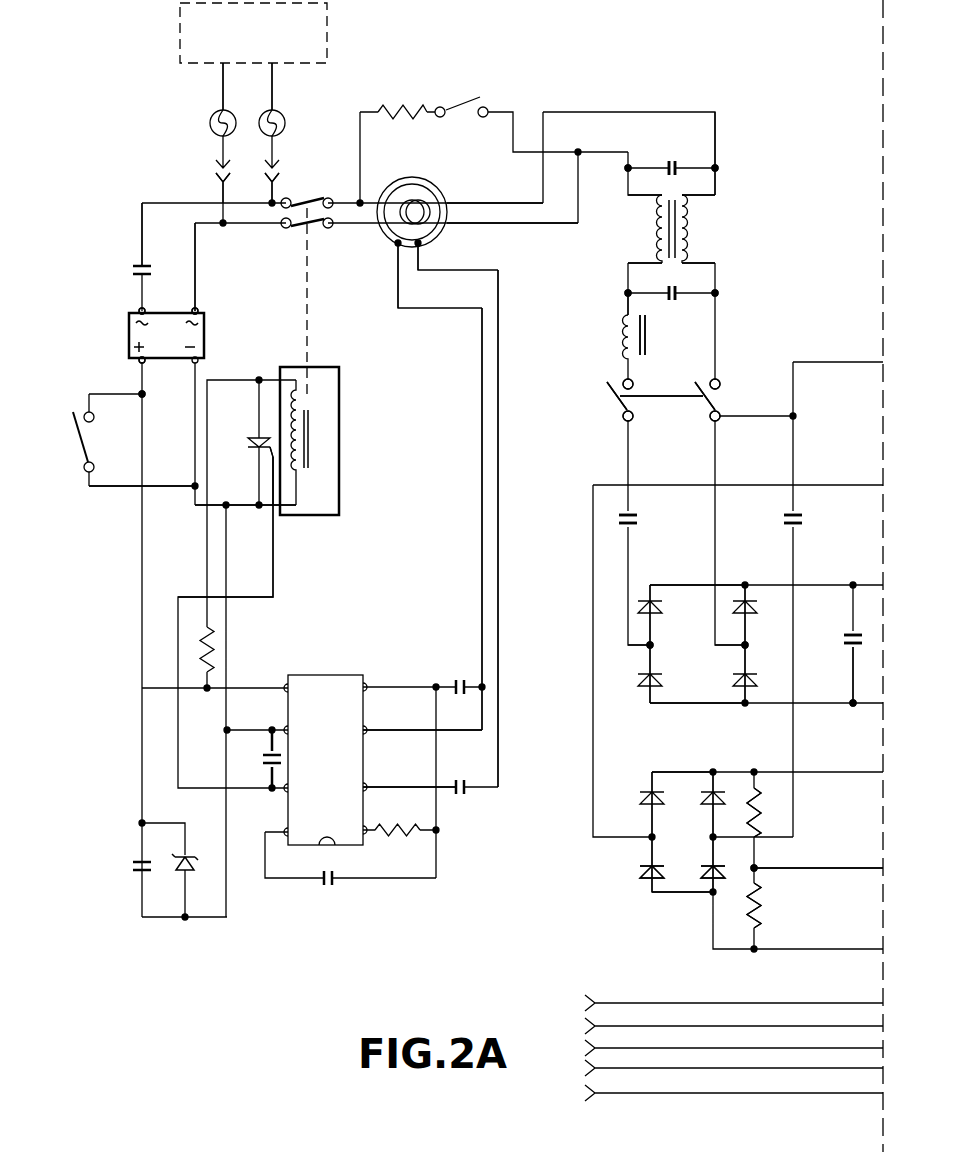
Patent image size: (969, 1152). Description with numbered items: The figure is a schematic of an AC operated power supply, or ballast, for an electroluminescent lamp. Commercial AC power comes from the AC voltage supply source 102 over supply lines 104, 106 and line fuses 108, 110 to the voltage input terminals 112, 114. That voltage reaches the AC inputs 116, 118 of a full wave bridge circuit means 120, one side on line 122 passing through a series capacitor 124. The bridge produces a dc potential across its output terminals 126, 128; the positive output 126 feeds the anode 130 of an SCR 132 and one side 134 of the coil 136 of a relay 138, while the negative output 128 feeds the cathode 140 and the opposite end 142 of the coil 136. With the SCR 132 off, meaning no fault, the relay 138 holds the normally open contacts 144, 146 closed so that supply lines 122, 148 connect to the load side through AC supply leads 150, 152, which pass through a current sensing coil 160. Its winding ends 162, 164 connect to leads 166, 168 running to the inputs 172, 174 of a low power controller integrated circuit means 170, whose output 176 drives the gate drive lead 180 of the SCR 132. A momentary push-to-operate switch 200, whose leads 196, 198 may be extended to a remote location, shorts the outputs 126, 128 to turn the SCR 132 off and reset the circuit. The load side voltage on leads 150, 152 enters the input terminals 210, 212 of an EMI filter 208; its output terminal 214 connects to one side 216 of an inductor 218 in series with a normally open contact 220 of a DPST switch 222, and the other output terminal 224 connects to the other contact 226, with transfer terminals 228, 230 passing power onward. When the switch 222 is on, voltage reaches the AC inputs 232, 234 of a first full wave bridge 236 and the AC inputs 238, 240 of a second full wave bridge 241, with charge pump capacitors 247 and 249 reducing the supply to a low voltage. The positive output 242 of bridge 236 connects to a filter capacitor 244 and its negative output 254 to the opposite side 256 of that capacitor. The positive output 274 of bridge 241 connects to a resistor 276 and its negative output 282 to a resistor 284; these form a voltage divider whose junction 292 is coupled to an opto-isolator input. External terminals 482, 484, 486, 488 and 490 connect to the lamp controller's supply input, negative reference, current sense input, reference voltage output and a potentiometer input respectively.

The AC voltage supply source 102 is at (180, 43).
The supply line 104 is at (222, 85).
The supply line 106 is at (272, 85).
The line fuse 108 is at (212, 131).
The line fuse 110 is at (285, 124).
The voltage input terminal 112 is at (220, 192).
The voltage input terminal 114 is at (277, 190).
The AC input of full wave bridge 116 is at (138, 309).
The AC input of full wave bridge 118 is at (199, 309).
The full wave bridge circuit means 120 is at (206, 337).
The AC voltage supply line 122 is at (139, 224).
The series capacitor 124 is at (136, 268).
The positive polarity voltage output 126 is at (138, 362).
The negative polarity voltage output 128 is at (142, 397).
The anode of SCR 130 is at (247, 438).
The SCR 132 is at (222, 442).
The one side of coil 134 is at (277, 377).
The relay coil 136 is at (306, 372).
The relay 138 is at (350, 434).
The cathode of SCR 140 is at (248, 457).
The opposite end of coil 142 is at (275, 508).
The normally open contact 144 is at (313, 248).
The normally open contact 146 is at (317, 178).
The AC voltage supply line 148 is at (197, 264).
The AC supply lead 150 is at (468, 200).
The AC supply lead 152 is at (505, 226).
The current sensing coil 160 is at (422, 180).
The winding end 162 is at (402, 249).
The winding end 164 is at (420, 247).
The lead of sensing coil 166 is at (482, 566).
The lead of sensing coil 168 is at (498, 566).
The low power controller integrated circuit means 170 is at (322, 656).
The input of controller 172 is at (368, 732).
The input of controller 174 is at (368, 790).
The output of controller 176 is at (286, 793).
The gate drive lead 180 is at (274, 586).
The lead of switch 196 is at (122, 396).
The lead of switch 198 is at (118, 489).
The push-to-operate switch 200 is at (56, 448).
The EMI filter 208 is at (744, 185).
The input terminal of filter 210 is at (720, 167).
The input terminal of filter 212 is at (632, 167).
The output terminal of EMI filter 214 is at (626, 292).
The one side of inductor 216 is at (626, 295).
The inductor 218 is at (626, 322).
The normally open contact of DPST switch 220 is at (624, 378).
The DPST switch 222 is at (740, 342).
The filter output terminal 224 is at (720, 292).
The normally open contact of DPST switch 226 is at (712, 378).
The transfer terminal of DPST switch 228 is at (624, 419).
The transfer terminal of DPST switch 230 is at (711, 419).
The AC input of first full wave bridge 232 is at (648, 644).
The AC input of first full wave bridge 234 is at (743, 645).
The first full wave bridge 236 is at (651, 560).
The AC input of second full wave bridge 238 is at (650, 840).
The AC input of second full wave bridge 240 is at (710, 838).
The second full wave bridge 241 is at (612, 783).
The positive voltage potential output 242 is at (677, 585).
The filter capacitor 244 is at (848, 637).
The charge pump capacitor 247 is at (622, 515).
The charge pump capacitor 249 is at (800, 524).
The negative voltage potential output 254 is at (658, 704).
The opposite side of filter capacitor 256 is at (852, 678).
The positive voltage potential output 274 is at (668, 772).
The resistor 276 is at (750, 810).
The negative voltage potential output 282 is at (663, 893).
The resistor 284 is at (764, 893).
The junction of resistors 292 is at (760, 867).
The terminal 482 is at (633, 1093).
The terminal 484 is at (712, 1068).
The terminal 486 is at (785, 1048).
The terminal 488 is at (697, 1026).
The terminal 490 is at (613, 1003).